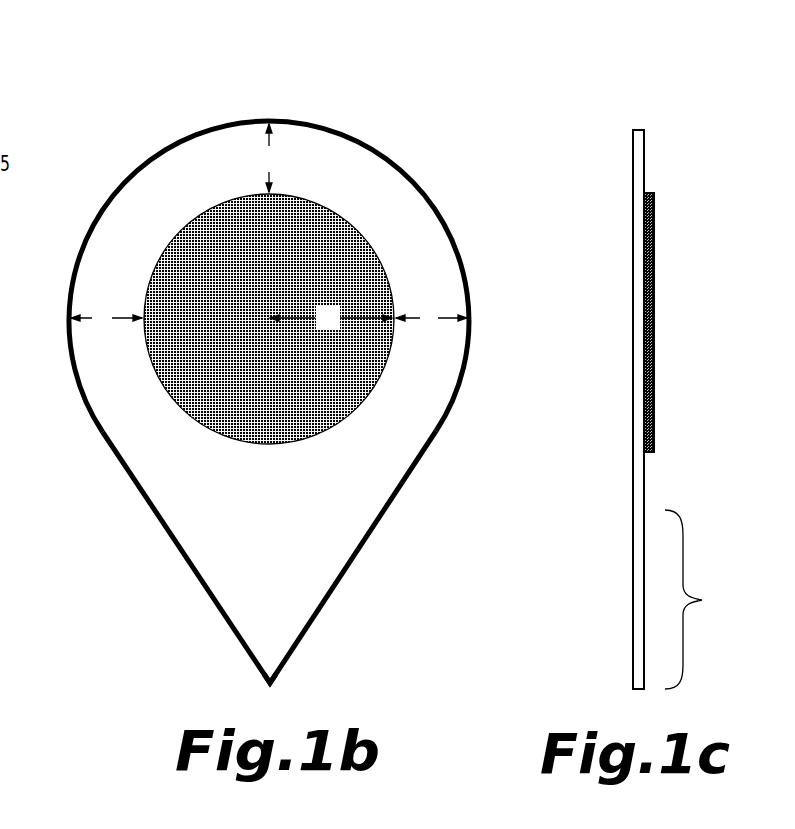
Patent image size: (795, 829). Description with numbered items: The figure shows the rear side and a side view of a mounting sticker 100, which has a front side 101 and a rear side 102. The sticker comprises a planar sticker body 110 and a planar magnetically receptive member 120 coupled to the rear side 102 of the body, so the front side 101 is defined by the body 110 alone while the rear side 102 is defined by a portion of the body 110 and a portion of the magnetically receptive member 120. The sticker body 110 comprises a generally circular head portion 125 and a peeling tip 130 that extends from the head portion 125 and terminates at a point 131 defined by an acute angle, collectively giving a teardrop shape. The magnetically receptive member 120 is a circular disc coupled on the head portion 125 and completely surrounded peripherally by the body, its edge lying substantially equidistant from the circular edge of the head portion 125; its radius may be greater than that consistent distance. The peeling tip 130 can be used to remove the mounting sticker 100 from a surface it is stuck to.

In FIG. 1B, the mounting sticker 100 is at (421, 126).
In FIG. 1C, the mounting sticker 100 is at (689, 108).
In FIG. 1C, the front side 101 is at (598, 182).
In FIG. 1B, the rear side 102 is at (133, 152).
In FIG. 1C, the rear side 102 is at (692, 182).
In FIG. 1B, the sticker body 110 is at (87, 414).
In FIG. 1C, the sticker body 110 is at (632, 484).
In FIG. 1B, the magnetically receptive member 120 is at (171, 404).
In FIG. 1C, the magnetically receptive member 120 is at (656, 386).
In FIG. 1B, the head portion 125 is at (482, 254).
In FIG. 1B, the peeling tip 130 is at (355, 594).
In FIG. 1C, the peeling tip 130 is at (700, 599).
In FIG. 1B, the point 131 is at (266, 681).